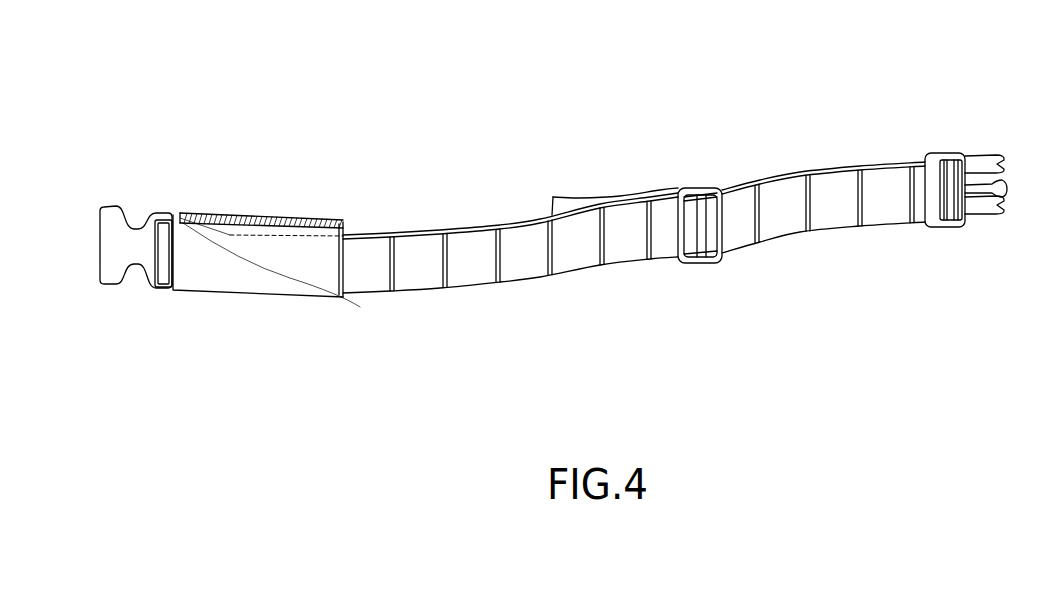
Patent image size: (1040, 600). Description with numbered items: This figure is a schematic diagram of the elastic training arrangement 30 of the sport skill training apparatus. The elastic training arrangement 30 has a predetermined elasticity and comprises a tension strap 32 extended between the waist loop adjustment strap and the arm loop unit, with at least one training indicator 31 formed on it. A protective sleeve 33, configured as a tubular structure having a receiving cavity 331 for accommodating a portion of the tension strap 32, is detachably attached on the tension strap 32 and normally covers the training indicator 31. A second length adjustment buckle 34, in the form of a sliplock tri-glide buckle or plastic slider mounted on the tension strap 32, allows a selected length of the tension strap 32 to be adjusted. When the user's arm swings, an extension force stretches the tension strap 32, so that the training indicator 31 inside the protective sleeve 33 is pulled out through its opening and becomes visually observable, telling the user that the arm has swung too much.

The elastic training arrangement 30 is at (333, 378).
The training indicator 31 is at (243, 252).
The tension strap 32 is at (788, 212).
The protective sleeve 33 is at (254, 282).
The receiving cavity 331 is at (188, 214).
The second length adjustment buckle 34 is at (684, 187).